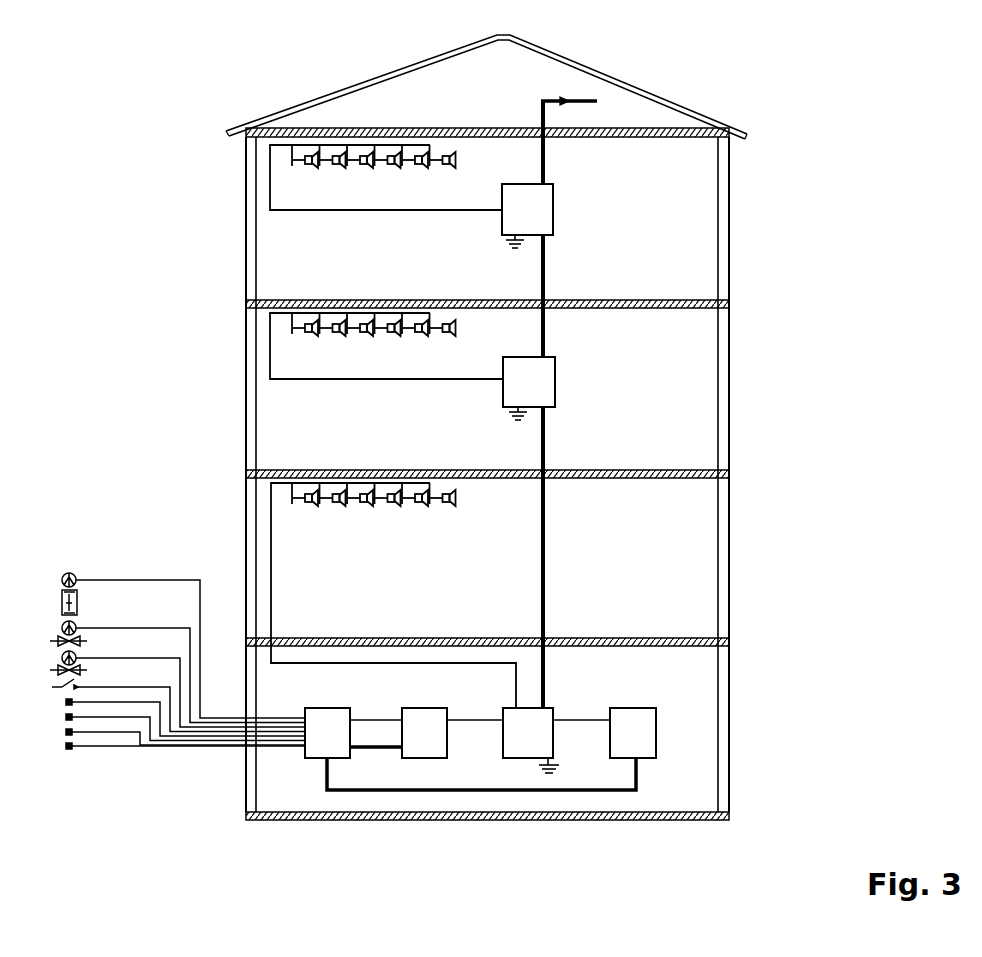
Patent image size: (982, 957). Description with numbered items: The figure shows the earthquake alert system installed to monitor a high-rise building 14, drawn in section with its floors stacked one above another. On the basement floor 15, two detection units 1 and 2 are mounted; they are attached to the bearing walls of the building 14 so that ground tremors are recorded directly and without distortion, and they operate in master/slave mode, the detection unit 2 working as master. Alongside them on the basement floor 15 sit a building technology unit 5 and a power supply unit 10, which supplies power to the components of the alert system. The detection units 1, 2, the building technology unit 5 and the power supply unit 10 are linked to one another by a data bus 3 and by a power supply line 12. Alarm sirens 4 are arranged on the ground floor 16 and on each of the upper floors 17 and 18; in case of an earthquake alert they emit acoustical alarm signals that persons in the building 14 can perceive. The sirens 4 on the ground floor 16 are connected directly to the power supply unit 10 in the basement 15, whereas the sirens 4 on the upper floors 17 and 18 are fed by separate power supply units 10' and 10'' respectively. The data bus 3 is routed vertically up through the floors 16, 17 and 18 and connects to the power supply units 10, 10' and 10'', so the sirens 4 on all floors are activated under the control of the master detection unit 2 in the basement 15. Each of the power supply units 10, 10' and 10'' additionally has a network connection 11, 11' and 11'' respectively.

The detection unit 1 is at (633, 733).
The detection unit 2 is at (424, 733).
The data bus 3 is at (545, 268).
The alarm sirens 4 is at (305, 167).
The building technology unit 5 is at (327, 733).
The power supply unit 10 is at (528, 733).
The power supply unit 10' is at (529, 382).
The power supply unit 10'' is at (527, 209).
The network connection 11 is at (524, 771).
The network connection 11' is at (508, 434).
The network connection 11'' is at (504, 263).
The power supply line 12 is at (368, 720).
The high-rise building 14 is at (842, 162).
The basement floor 15 is at (673, 678).
The ground floor 16 is at (677, 566).
The upper floor 17 is at (673, 397).
The upper floor 18 is at (680, 265).